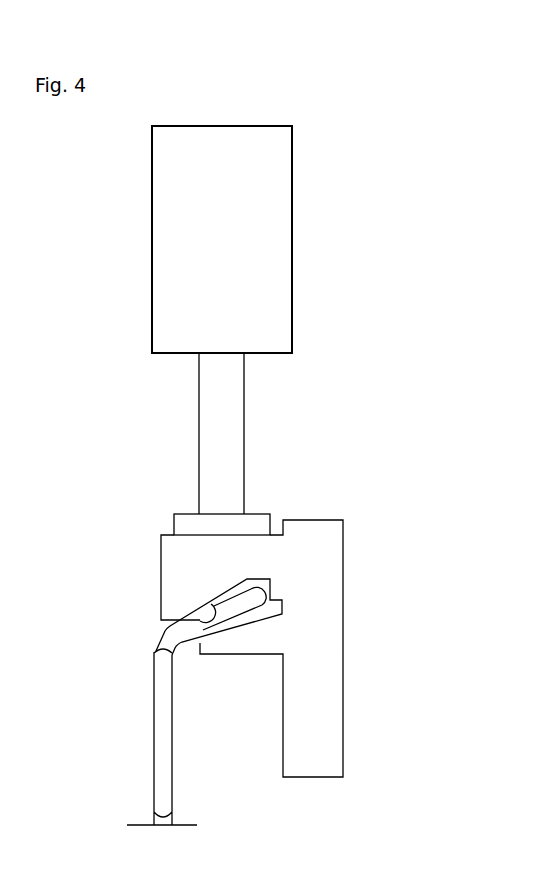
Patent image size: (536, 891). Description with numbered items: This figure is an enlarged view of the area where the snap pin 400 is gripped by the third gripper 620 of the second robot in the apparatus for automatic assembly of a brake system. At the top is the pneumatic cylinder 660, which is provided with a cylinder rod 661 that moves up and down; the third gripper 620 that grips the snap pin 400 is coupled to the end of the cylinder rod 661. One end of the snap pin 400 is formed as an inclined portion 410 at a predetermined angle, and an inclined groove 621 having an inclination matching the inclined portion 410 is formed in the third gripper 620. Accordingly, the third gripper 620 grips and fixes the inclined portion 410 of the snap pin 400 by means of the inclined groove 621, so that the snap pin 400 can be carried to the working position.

The pneumatic cylinder 660 is at (272, 249).
The cylinder rod 661 is at (228, 433).
The third gripper 620 is at (328, 572).
The inclined groove 621 is at (212, 614).
The inclined portion 410 is at (232, 613).
The snap pin 400 is at (163, 730).